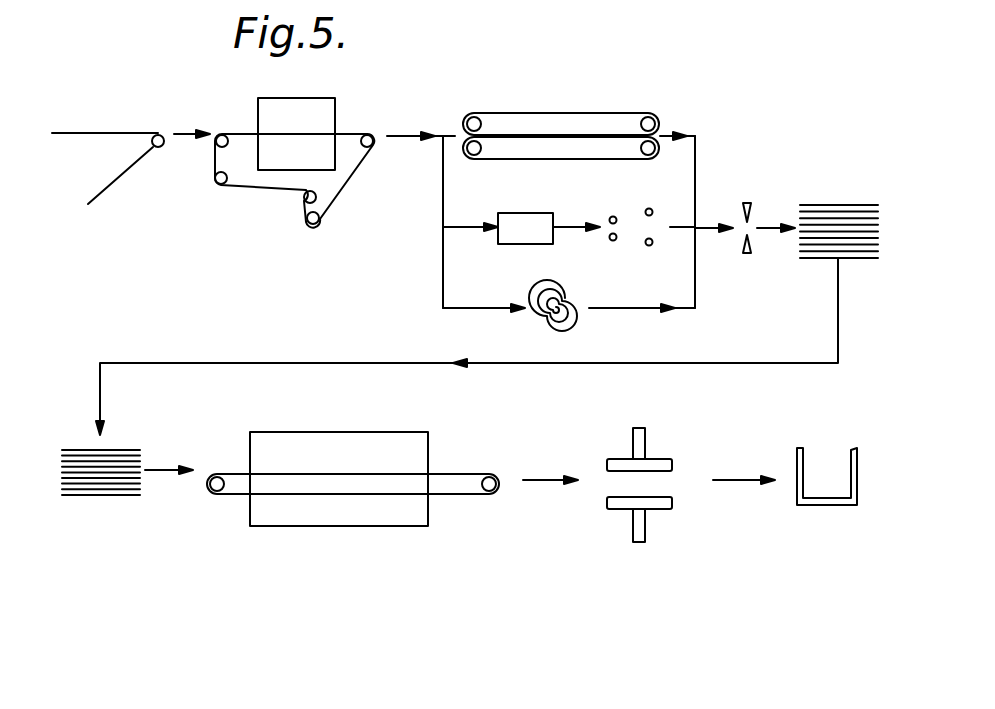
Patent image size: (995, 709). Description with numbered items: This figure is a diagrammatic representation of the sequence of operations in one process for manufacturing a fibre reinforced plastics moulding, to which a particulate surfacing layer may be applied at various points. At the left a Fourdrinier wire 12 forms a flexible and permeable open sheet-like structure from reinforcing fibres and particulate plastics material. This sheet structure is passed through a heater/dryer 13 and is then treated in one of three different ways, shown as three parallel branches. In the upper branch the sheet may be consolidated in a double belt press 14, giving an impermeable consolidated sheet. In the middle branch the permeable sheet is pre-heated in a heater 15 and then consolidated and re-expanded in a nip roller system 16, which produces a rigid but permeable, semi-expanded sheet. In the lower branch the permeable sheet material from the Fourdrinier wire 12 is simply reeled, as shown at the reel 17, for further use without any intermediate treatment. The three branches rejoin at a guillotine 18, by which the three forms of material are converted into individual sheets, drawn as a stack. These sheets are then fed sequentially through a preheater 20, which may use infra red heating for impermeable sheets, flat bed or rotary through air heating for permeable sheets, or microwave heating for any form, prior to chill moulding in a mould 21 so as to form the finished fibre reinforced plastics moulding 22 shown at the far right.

The Fourdrinier wire 12 is at (108, 132).
The heater/dryer 13 is at (338, 110).
The double belt press 14 is at (610, 113).
The heater 15 is at (520, 213).
The nip roller system 16 is at (626, 248).
The reel 17 is at (566, 322).
The guillotine 18 is at (751, 186).
The preheater 20 is at (352, 527).
The mould 21 is at (646, 443).
The fibre reinforced plastics moulding 22 is at (808, 462).